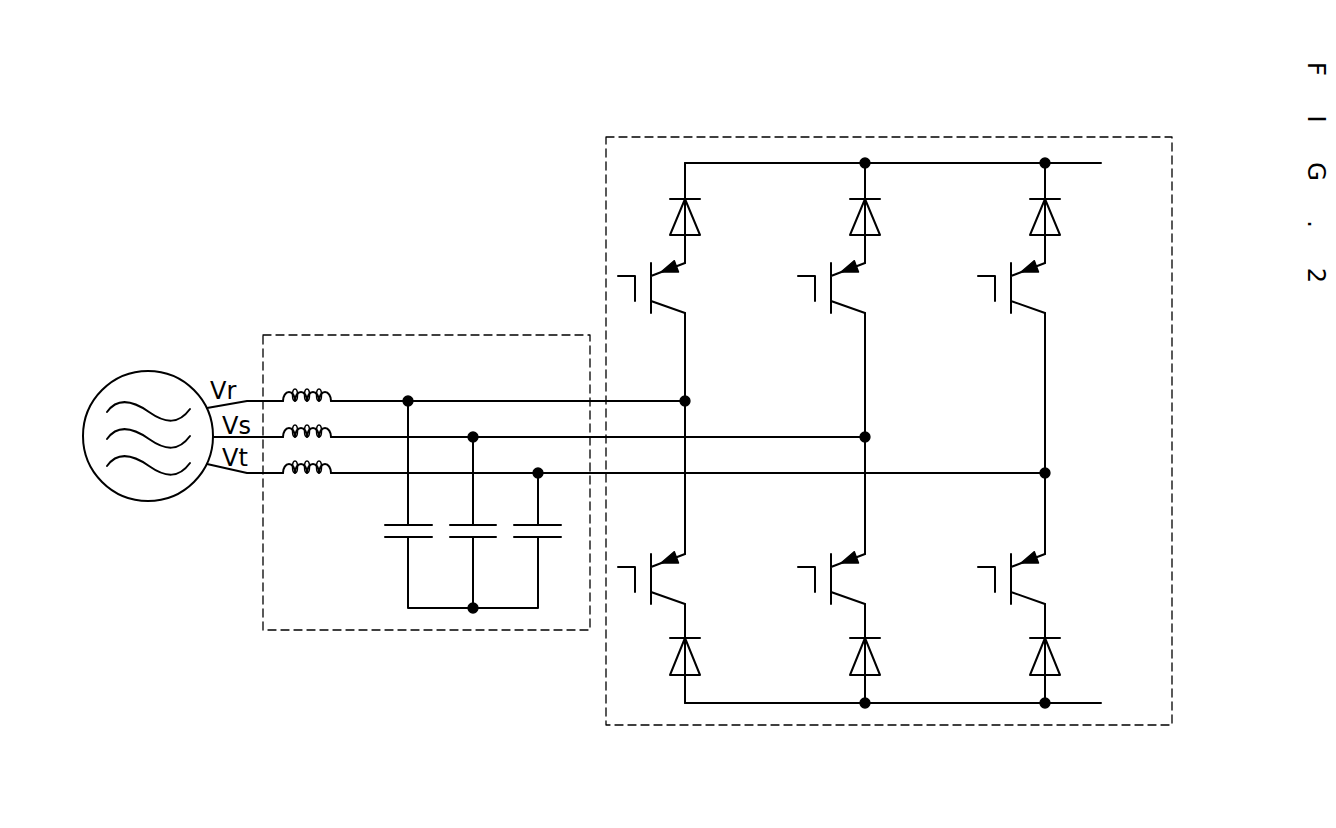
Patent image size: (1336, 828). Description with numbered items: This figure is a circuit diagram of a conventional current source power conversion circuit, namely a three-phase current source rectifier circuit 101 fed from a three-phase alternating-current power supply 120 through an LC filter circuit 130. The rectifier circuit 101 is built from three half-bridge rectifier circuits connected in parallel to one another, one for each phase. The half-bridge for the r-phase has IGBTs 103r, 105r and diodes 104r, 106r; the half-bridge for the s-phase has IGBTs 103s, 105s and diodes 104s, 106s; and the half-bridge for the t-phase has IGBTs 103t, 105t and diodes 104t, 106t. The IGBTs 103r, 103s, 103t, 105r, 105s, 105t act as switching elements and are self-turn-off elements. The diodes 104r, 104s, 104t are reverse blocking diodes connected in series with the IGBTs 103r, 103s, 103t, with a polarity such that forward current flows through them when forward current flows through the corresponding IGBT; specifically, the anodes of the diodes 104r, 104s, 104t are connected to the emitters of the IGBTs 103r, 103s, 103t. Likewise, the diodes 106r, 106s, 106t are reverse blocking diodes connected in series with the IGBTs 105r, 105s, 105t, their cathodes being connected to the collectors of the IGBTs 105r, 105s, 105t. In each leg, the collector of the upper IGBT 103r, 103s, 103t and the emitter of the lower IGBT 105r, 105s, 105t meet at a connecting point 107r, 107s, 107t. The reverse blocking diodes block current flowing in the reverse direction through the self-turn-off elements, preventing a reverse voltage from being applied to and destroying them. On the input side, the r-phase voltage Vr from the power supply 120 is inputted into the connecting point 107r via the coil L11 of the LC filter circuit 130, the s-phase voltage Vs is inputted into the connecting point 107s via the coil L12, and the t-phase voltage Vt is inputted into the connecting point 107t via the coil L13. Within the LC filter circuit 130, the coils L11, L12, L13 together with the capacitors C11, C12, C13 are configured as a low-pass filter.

The three-phase current source rectifier circuit 101 is at (889, 133).
The three-phase alternating-current power supply 120 is at (146, 370).
The LC filter circuit 130 is at (428, 333).
The coil L11 is at (331, 393).
The coil L12 is at (331, 429).
The coil L13 is at (331, 465).
The capacitor C11 is at (416, 541).
The capacitor C12 is at (481, 541).
The capacitor C13 is at (546, 541).
The IGBT 103r is at (676, 292).
The IGBT 103s is at (856, 292).
The IGBT 103t is at (1036, 292).
The diode 104r is at (700, 213).
The diode 104s is at (880, 213).
The diode 104t is at (1060, 213).
The IGBT 105r is at (676, 583).
The IGBT 105s is at (856, 583).
The IGBT 105t is at (1036, 583).
The diode 106r is at (700, 653).
The diode 106s is at (880, 653).
The diode 106t is at (1060, 653).
The connecting point 107r is at (691, 402).
The connecting point 107s is at (871, 438).
The connecting point 107t is at (1051, 474).